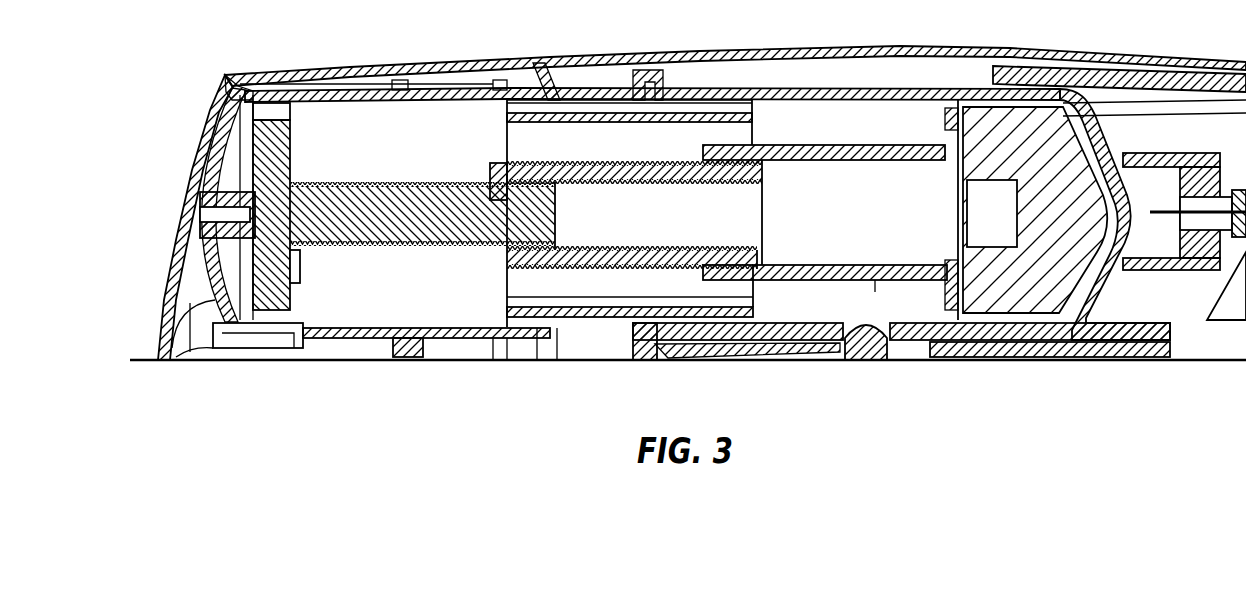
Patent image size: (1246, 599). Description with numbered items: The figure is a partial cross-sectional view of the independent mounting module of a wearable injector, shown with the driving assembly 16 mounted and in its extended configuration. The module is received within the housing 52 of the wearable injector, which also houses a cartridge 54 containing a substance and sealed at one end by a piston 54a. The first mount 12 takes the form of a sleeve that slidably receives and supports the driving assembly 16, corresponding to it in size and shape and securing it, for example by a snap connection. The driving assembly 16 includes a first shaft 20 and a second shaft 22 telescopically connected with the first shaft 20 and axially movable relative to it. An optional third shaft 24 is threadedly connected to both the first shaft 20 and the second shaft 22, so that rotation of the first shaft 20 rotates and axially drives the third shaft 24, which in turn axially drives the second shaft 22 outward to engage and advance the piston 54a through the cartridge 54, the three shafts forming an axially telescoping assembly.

The first mount 12 is at (353, 81).
The first shaft 20 is at (349, 197).
The third shaft 24 is at (612, 197).
The driving assembly 16 is at (723, 139).
The second shaft 22 is at (827, 193).
The cartridge 54 is at (863, 88).
The piston 54a is at (1020, 143).
The housing 52 is at (200, 328).